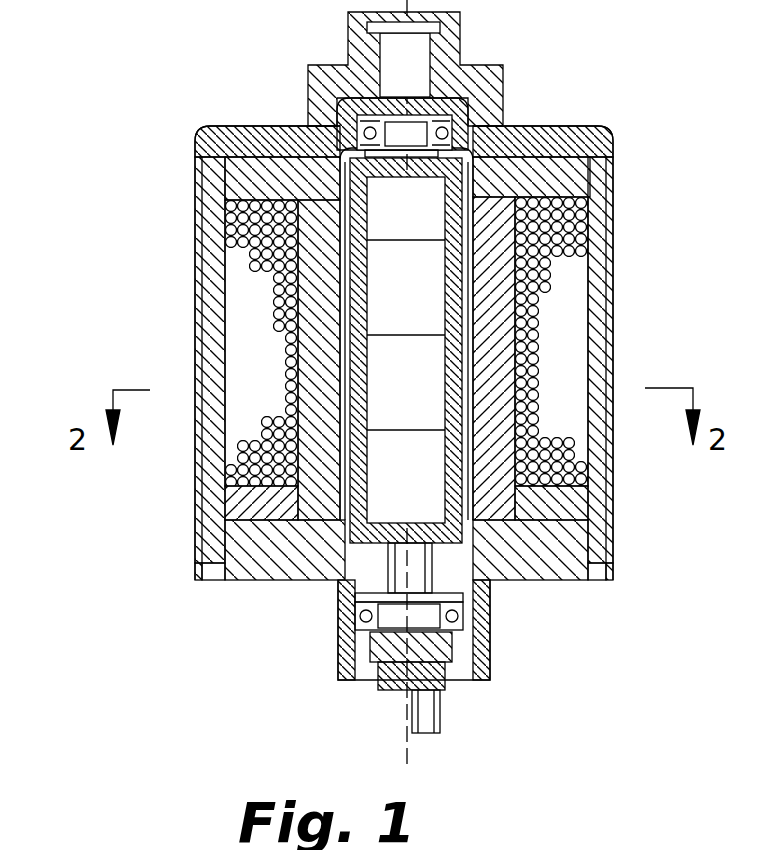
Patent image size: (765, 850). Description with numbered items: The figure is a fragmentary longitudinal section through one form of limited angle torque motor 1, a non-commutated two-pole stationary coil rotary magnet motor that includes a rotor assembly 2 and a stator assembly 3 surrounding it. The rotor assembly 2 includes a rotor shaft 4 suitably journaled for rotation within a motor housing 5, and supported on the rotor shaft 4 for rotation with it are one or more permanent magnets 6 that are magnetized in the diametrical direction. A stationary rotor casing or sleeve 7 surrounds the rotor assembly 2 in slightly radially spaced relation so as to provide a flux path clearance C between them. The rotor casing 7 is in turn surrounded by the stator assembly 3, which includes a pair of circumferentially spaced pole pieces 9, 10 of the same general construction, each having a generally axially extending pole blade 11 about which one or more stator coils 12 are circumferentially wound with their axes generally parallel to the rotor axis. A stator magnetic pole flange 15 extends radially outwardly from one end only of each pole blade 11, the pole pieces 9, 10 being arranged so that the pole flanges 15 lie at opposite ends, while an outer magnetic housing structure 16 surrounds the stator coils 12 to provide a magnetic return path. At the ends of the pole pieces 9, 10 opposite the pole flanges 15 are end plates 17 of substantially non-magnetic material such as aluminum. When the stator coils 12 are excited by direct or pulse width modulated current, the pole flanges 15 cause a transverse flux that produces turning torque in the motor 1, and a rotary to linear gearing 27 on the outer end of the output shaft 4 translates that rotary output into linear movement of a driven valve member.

The limited angle torque motor 1 is at (587, 110).
The rotor assembly 2 is at (333, 152).
The stator assembly 3 is at (196, 153).
The rotor shaft 4 is at (400, 566).
The motor housing 5 is at (498, 79).
The permanent magnets 6 is at (385, 312).
The rotor casing 7 is at (470, 212).
The pole piece 9 is at (250, 170).
The pole piece 10 is at (552, 512).
The pole blade 11 is at (318, 357).
The stator coils 12 is at (566, 260).
The stator magnetic pole flange 15 is at (272, 165).
The outer magnetic housing structure 16 is at (212, 370).
The end plates 17 is at (540, 160).
The rotary to linear gearing 27 is at (412, 718).
The flux path clearance C is at (470, 372).